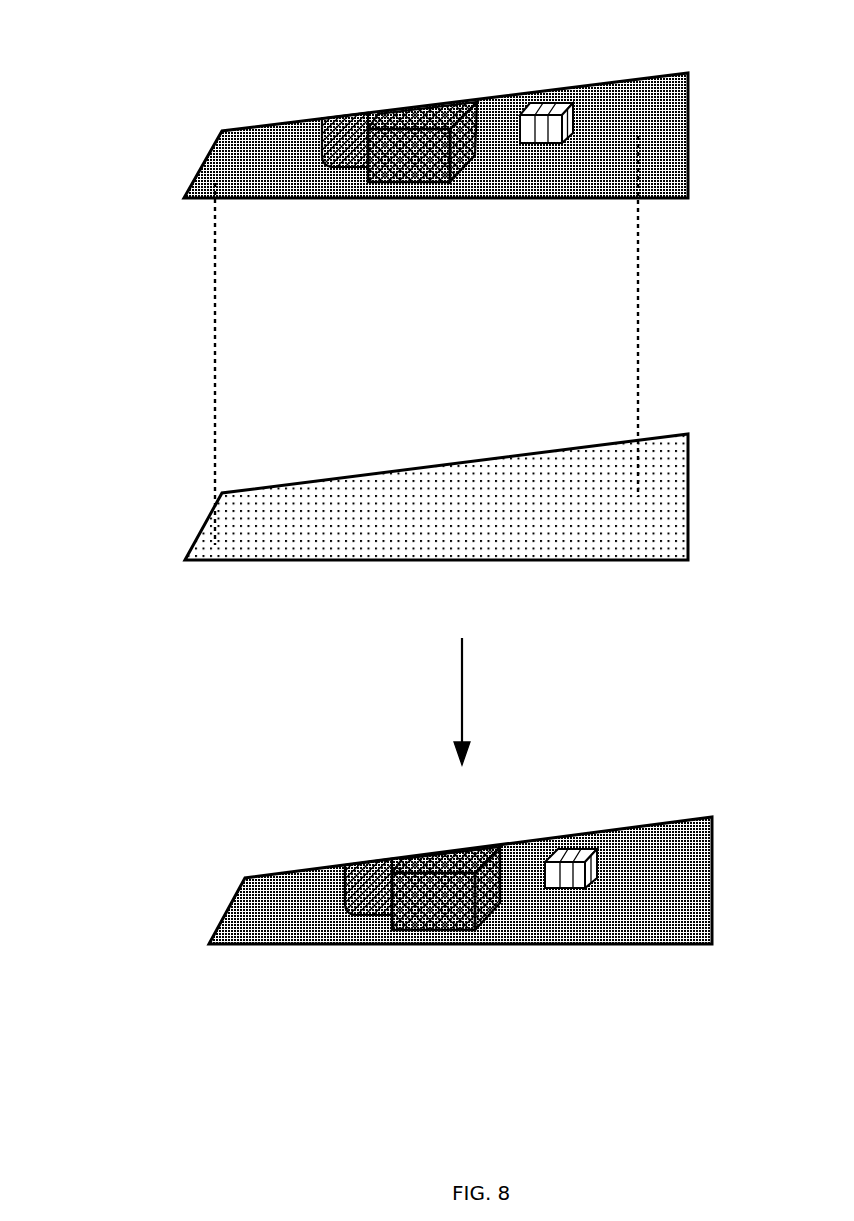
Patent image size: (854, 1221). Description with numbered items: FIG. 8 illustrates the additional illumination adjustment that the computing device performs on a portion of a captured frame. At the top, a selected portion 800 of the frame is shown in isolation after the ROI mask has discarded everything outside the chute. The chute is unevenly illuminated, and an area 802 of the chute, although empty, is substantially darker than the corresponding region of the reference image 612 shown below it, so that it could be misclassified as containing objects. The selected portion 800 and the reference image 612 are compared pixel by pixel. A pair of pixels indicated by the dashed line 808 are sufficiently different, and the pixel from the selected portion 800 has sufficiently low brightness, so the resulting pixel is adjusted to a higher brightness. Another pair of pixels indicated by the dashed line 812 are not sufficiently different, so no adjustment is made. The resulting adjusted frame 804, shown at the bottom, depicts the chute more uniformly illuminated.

The selected portion 800 is at (371, 116).
The area 802 is at (253, 150).
The dashed line 808 is at (215, 353).
The dashed line 812 is at (638, 324).
The reference image 612 is at (173, 552).
The adjusted frame 804 is at (232, 874).